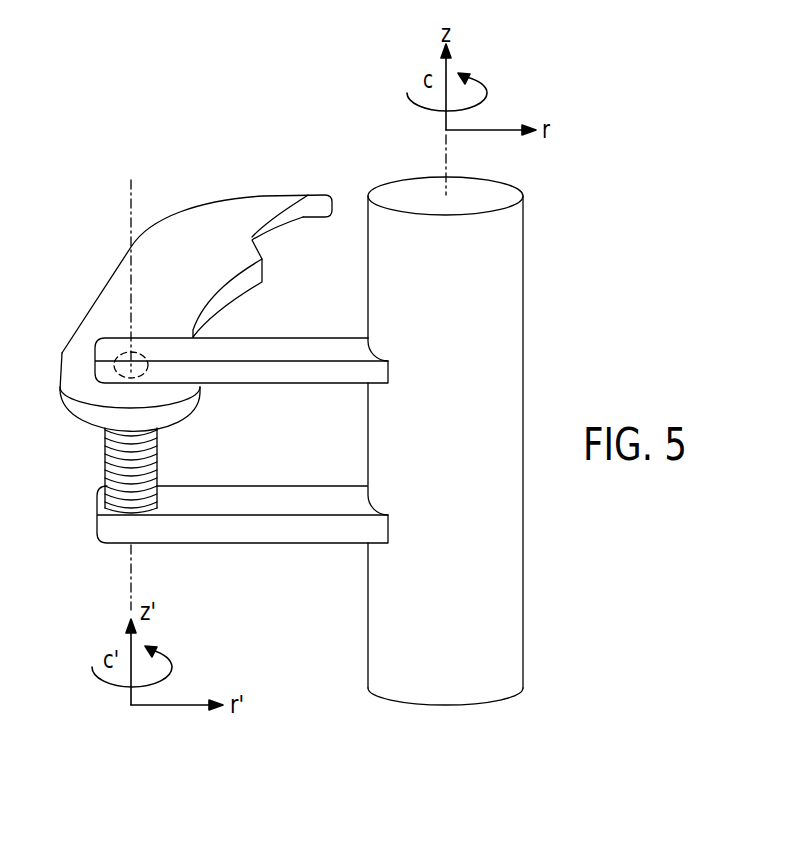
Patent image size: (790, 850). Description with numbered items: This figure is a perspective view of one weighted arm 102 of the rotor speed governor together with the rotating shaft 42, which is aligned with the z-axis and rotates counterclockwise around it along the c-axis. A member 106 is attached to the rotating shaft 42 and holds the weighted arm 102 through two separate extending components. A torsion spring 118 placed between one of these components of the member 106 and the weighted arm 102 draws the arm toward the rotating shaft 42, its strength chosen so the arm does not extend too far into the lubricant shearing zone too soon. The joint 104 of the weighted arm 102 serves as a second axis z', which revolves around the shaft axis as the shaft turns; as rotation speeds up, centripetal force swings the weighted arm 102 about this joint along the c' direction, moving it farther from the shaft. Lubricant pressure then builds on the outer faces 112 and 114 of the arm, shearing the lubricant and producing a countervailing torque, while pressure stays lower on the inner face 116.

The rotating shaft 42 is at (507, 275).
The weighted arm 102 is at (187, 248).
The joint 104 is at (115, 382).
The member 106 is at (293, 349).
The outer face 112 is at (240, 197).
The outer face 114 is at (120, 262).
The inner face 116 is at (292, 212).
The torsion spring 118 is at (107, 457).